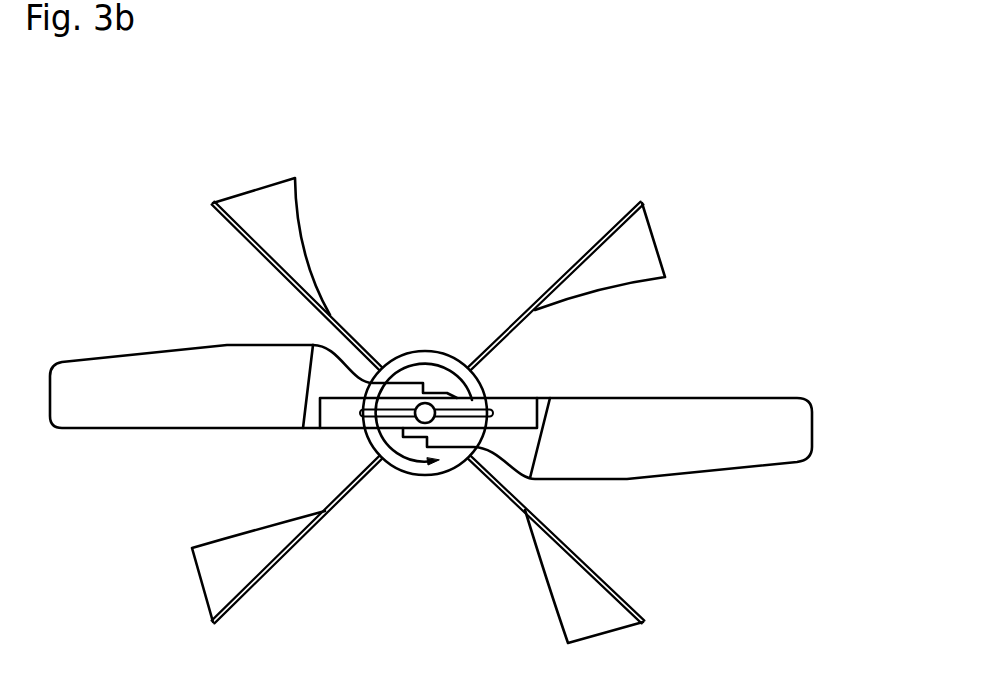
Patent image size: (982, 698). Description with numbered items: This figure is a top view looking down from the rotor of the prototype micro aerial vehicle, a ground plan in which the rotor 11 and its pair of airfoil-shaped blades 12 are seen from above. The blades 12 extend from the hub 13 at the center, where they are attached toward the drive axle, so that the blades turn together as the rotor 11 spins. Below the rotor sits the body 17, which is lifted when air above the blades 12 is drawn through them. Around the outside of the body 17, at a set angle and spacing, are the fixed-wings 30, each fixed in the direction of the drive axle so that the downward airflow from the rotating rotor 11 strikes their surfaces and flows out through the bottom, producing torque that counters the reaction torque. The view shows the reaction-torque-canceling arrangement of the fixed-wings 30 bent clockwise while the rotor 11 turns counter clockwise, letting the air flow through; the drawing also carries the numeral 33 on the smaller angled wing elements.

The rotor 11 is at (116, 324).
The blades 12 is at (710, 418).
The hub 13 is at (525, 398).
The body 17 is at (449, 458).
The fixed-wings 30 is at (645, 581).
The auxiliary blades 33 is at (620, 253).